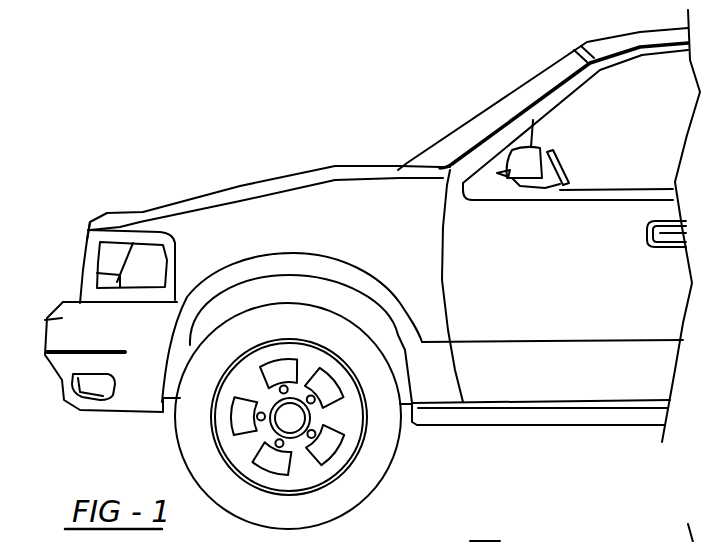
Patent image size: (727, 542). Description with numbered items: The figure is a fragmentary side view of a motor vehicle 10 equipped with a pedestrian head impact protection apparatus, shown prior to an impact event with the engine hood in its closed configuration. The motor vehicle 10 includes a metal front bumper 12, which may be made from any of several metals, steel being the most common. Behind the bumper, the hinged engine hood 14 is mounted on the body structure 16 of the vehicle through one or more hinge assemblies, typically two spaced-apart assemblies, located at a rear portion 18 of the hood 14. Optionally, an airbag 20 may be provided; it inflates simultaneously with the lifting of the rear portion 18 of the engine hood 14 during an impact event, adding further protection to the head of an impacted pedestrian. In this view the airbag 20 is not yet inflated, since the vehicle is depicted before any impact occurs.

The motor vehicle 10 is at (150, 156).
The metal front bumper 12 is at (50, 362).
The engine hood 14 is at (263, 176).
The body structure 16 is at (407, 197).
The rear portion 18 is at (335, 163).
The airbag 20 is at (470, 541).